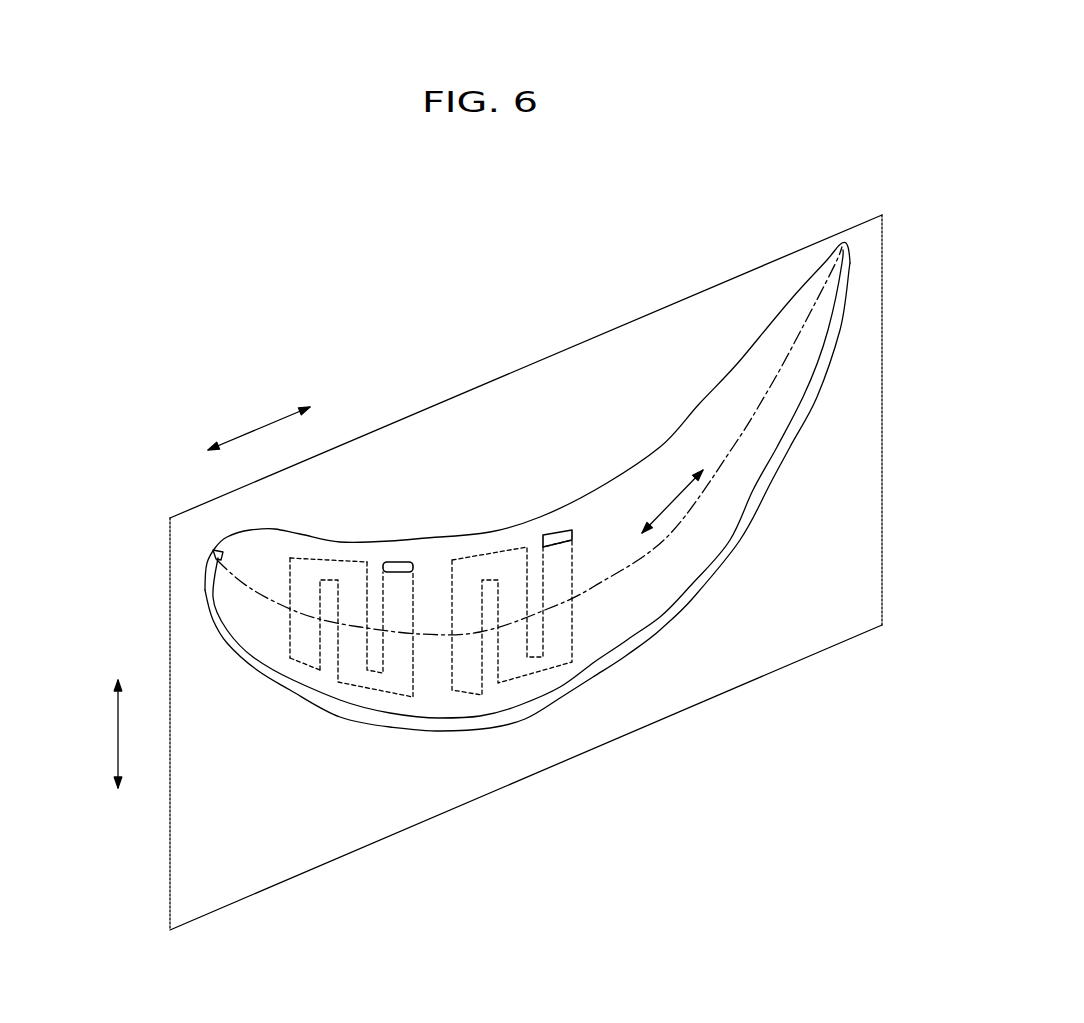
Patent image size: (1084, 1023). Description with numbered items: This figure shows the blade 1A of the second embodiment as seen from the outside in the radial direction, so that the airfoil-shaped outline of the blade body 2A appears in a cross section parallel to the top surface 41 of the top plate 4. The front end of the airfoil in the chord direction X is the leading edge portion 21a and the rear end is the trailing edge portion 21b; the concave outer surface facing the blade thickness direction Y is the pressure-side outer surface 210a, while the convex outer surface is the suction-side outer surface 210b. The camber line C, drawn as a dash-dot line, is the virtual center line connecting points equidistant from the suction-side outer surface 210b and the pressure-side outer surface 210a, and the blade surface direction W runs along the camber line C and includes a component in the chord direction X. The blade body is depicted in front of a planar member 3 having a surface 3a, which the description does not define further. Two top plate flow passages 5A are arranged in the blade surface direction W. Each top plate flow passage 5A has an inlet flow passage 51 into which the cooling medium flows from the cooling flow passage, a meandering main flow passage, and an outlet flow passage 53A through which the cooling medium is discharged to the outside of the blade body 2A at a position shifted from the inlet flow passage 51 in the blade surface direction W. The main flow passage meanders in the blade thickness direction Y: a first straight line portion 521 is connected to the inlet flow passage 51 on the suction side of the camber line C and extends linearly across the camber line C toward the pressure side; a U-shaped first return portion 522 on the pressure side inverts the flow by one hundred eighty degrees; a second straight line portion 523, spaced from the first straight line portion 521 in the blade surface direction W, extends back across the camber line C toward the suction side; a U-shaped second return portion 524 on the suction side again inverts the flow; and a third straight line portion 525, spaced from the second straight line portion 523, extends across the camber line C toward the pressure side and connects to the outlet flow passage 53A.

The blade 1A is at (832, 197).
The blade body 2A is at (790, 286).
The leading edge portion 21a is at (214, 552).
The trailing edge portion 21b is at (848, 246).
The pressure-side outer surface 210a is at (683, 422).
The suction-side outer surface 210b is at (660, 630).
The coating layer 4 is at (596, 668).
The top surface 41 is at (750, 380).
The top plate flow passage 5A is at (355, 549).
The inlet flow passage 51 is at (312, 665).
The first straight line portion 521 is at (290, 627).
The first return portion 522 is at (330, 556).
The second straight line portion 523 is at (307, 668).
The second return portion 524 is at (333, 652).
The third straight line portion 525 is at (417, 657).
The outlet flow passage 53A is at (398, 562).
The reference plane 3 is at (895, 511).
The surface of reference plane 3a is at (820, 630).
The camber line C is at (773, 387).
The chord direction X is at (259, 422).
The blade thickness direction Y is at (109, 734).
The blade surface direction W is at (672, 501).